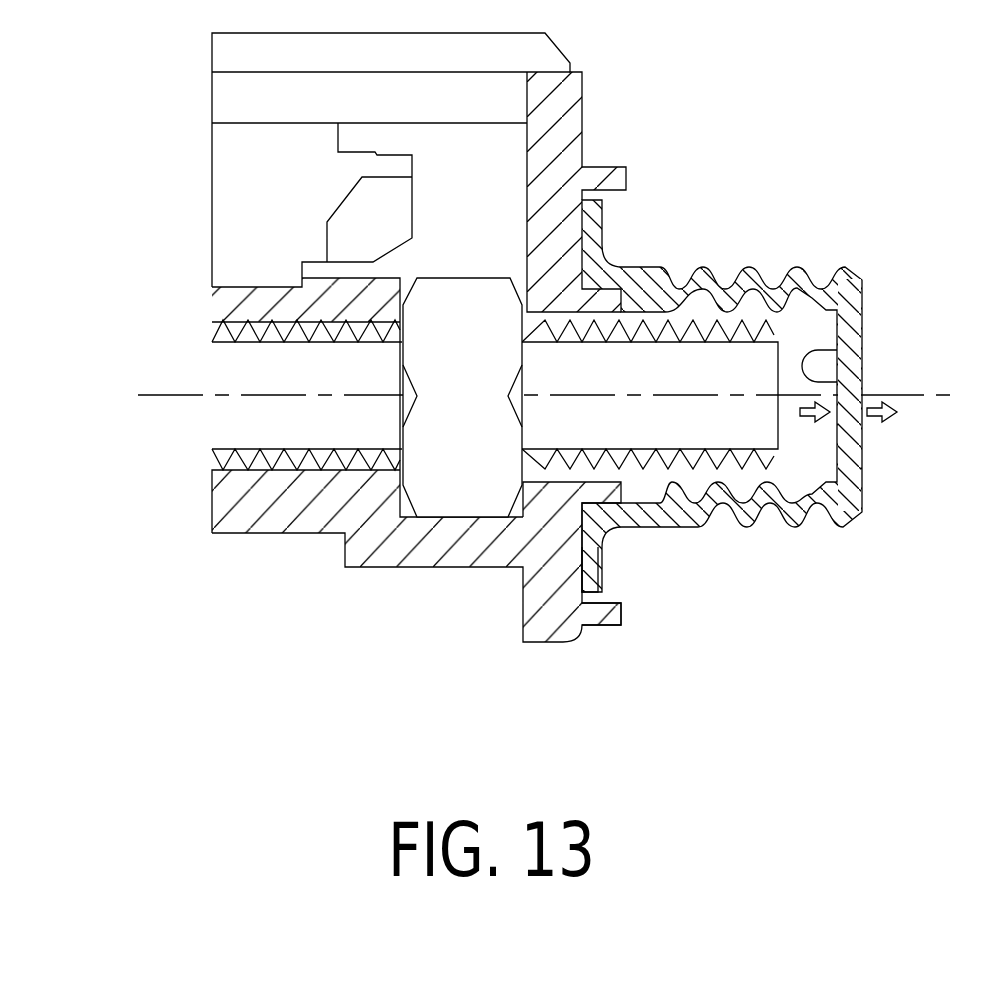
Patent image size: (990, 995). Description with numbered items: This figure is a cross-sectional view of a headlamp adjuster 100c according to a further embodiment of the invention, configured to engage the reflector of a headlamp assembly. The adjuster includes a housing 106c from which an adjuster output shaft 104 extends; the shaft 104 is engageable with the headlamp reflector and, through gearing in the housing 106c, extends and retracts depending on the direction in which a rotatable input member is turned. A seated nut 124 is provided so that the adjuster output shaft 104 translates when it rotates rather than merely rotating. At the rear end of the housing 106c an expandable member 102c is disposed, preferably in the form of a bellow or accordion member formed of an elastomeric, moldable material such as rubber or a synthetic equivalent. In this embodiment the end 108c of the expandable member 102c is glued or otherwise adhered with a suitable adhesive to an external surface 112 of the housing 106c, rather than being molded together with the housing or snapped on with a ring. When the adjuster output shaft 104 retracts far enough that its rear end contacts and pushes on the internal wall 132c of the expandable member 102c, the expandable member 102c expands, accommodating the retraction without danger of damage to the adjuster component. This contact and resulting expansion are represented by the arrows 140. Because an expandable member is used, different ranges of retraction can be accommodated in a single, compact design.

The headlamp adjuster 100c is at (655, 128).
The expandable member 102c is at (786, 262).
The adjuster output shaft 104 is at (727, 472).
The housing 106c is at (490, 597).
The end of the expandable member 108c is at (590, 563).
The external surface 112 is at (600, 563).
The seated nut 124 is at (417, 472).
The internal wall 132c is at (838, 350).
The arrows 140 is at (805, 420).